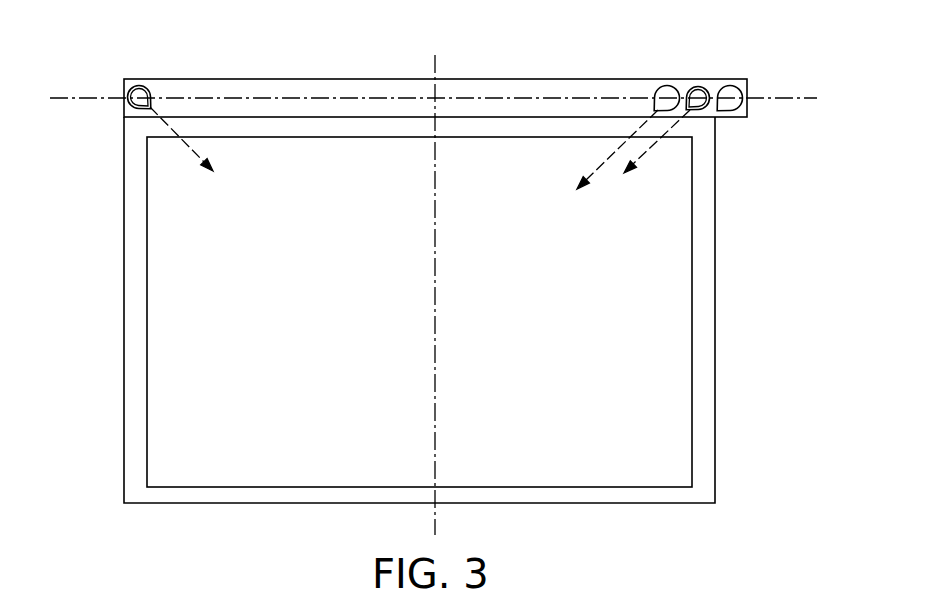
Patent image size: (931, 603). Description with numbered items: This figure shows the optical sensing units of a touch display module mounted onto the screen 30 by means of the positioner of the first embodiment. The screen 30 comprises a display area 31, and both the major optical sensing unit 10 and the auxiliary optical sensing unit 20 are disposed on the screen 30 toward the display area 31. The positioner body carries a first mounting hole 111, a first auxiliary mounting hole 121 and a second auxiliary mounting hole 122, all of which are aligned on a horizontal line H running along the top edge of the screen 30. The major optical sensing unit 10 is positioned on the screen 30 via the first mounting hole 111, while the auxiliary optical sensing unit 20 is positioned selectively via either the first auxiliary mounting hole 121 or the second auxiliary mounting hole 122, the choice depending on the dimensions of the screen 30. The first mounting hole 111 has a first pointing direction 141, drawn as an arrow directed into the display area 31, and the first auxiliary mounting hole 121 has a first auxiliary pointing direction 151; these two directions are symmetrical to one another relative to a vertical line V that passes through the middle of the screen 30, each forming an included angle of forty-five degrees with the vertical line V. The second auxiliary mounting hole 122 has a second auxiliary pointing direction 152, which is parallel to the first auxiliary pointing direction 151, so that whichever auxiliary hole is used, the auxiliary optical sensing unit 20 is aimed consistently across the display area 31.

The major optical sensing unit 10 is at (131, 90).
The first mounting hole 111 is at (127, 106).
The first pointing direction 141 is at (187, 145).
The first auxiliary mounting hole 121 is at (662, 86).
The auxiliary optical sensing unit 20 is at (700, 86).
The second auxiliary mounting hole 122 is at (712, 84).
The first auxiliary pointing direction 151 is at (597, 175).
The second auxiliary pointing direction 152 is at (648, 150).
The screen 30 is at (707, 318).
The display area 31 is at (667, 393).
The horizontal line H is at (807, 93).
The vertical line V is at (435, 527).